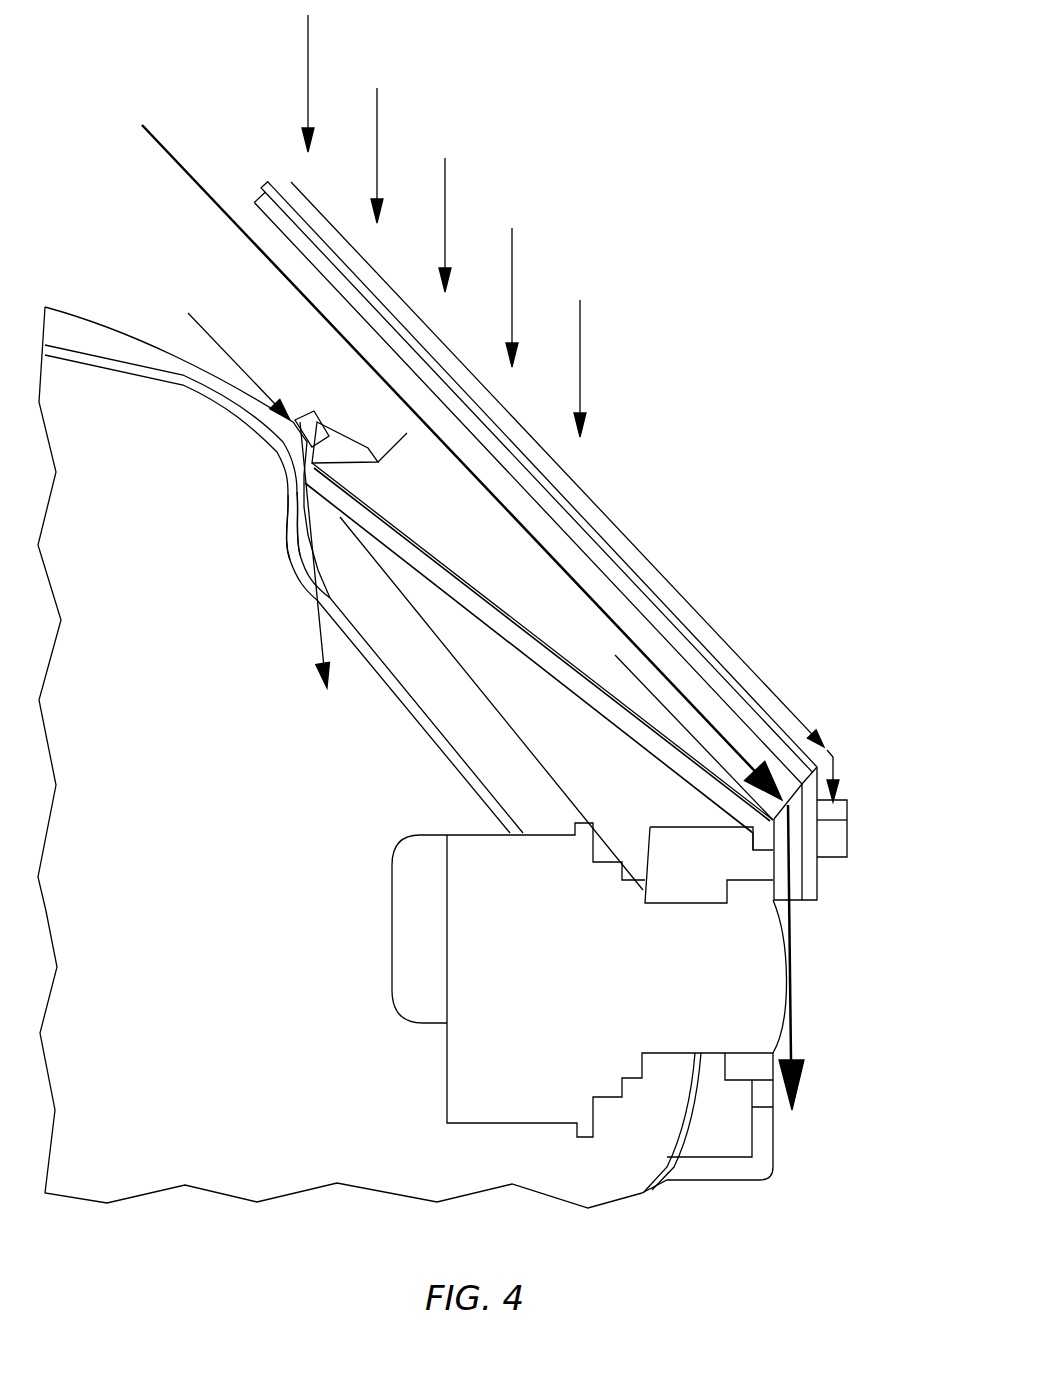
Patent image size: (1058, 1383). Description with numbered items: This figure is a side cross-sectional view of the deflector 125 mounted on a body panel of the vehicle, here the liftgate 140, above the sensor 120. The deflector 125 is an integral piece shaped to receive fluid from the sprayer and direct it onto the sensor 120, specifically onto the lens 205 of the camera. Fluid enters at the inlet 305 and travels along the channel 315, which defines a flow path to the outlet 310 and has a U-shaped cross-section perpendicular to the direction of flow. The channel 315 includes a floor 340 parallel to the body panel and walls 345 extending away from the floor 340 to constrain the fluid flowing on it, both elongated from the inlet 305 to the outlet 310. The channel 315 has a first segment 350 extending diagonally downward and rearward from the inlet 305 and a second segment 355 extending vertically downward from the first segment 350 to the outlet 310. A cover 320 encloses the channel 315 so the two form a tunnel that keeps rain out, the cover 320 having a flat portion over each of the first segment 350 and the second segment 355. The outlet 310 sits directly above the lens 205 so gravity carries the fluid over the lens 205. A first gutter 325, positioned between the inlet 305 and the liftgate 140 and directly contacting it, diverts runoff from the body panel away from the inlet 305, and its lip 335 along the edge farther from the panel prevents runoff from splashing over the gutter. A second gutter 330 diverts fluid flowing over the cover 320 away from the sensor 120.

The sensor 120 is at (503, 1058).
The deflector 125 is at (490, 472).
The liftgate 140 is at (225, 412).
The lens 205 is at (782, 1042).
The inlet 305 is at (397, 437).
The outlet 310 is at (812, 900).
The channel 315 is at (533, 648).
The cover 320 is at (590, 547).
The first gutter 325 is at (285, 460).
The second gutter 330 is at (848, 835).
The lip 335 is at (312, 412).
The floor 340 is at (617, 663).
The walls 345 is at (677, 713).
The first segment 350 is at (727, 677).
The second segment 355 is at (795, 818).